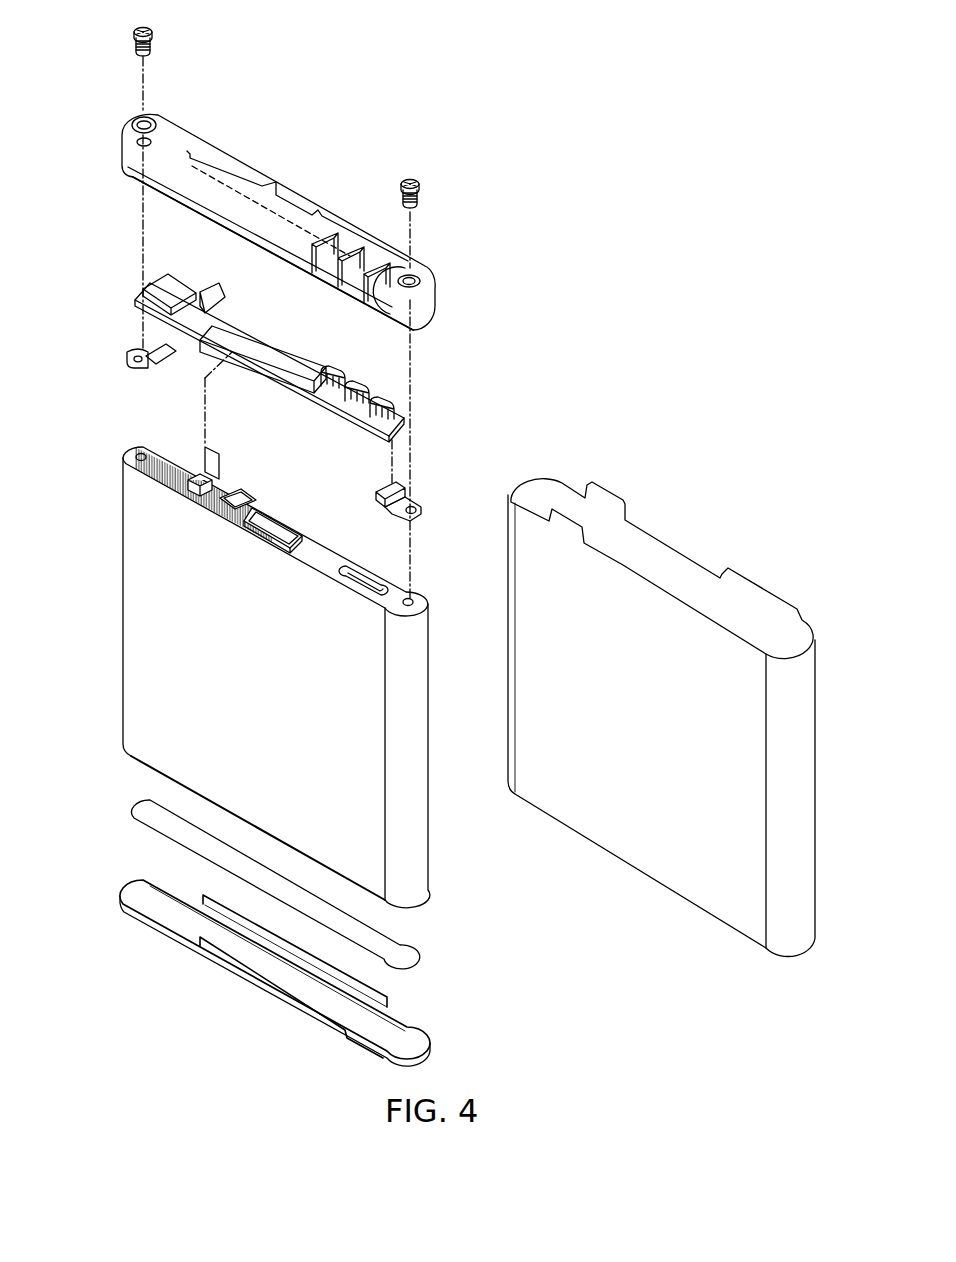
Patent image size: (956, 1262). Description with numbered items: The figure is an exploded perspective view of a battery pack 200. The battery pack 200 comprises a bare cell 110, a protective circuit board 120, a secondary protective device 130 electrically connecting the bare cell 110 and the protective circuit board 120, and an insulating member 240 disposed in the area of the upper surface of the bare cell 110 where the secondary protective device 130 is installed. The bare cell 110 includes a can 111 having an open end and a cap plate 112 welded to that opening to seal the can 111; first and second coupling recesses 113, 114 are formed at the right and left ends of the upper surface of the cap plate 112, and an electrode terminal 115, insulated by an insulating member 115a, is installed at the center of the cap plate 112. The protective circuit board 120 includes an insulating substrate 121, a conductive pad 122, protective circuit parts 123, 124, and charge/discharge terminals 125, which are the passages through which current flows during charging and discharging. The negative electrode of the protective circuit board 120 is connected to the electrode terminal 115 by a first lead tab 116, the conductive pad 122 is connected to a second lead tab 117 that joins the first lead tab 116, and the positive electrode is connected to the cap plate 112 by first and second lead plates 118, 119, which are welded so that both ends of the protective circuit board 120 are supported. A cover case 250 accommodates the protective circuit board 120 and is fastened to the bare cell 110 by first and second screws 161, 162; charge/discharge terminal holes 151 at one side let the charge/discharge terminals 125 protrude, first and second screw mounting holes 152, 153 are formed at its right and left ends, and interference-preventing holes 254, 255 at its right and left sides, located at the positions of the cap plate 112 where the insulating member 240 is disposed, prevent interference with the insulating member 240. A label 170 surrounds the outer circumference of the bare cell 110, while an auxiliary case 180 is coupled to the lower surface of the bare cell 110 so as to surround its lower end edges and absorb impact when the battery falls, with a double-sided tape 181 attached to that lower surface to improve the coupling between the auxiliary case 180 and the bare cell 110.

The battery pack 200 is at (658, 124).
The bare cell 110 is at (263, 651).
The can 111 is at (131, 545).
The cap plate 112 is at (128, 466).
The first coupling recess 113 is at (134, 455).
The second coupling recess 114 is at (414, 600).
The electrode terminal 115 is at (301, 529).
The insulating member 115a is at (306, 523).
The first lead tab 116 is at (272, 514).
The second lead tab 117 is at (216, 448).
The first lead plate 118 is at (136, 352).
The second lead plate 119 is at (423, 505).
The protective circuit board 120 is at (299, 336).
The insulating substrate 121 is at (411, 417).
The conductive pad 122 is at (214, 296).
The protective circuit part 123 is at (170, 283).
The protective circuit part 124 is at (292, 350).
The charge/discharge terminals 125 is at (387, 418).
The secondary protective device 130 is at (245, 497).
The insulating member 240 is at (162, 450).
The cover case 250 is at (276, 210).
The charge/discharge terminal holes 151 is at (381, 262).
The first screw mounting hole 152 is at (132, 121).
The second screw mounting hole 153 is at (432, 277).
The interference-preventing hole 254 is at (147, 180).
The interference-preventing hole 255 is at (199, 149).
The first screw 161 is at (131, 38).
The second screw 162 is at (422, 200).
The label 170 is at (684, 546).
The auxiliary case 180 is at (237, 933).
The double-sided tape 181 is at (137, 811).